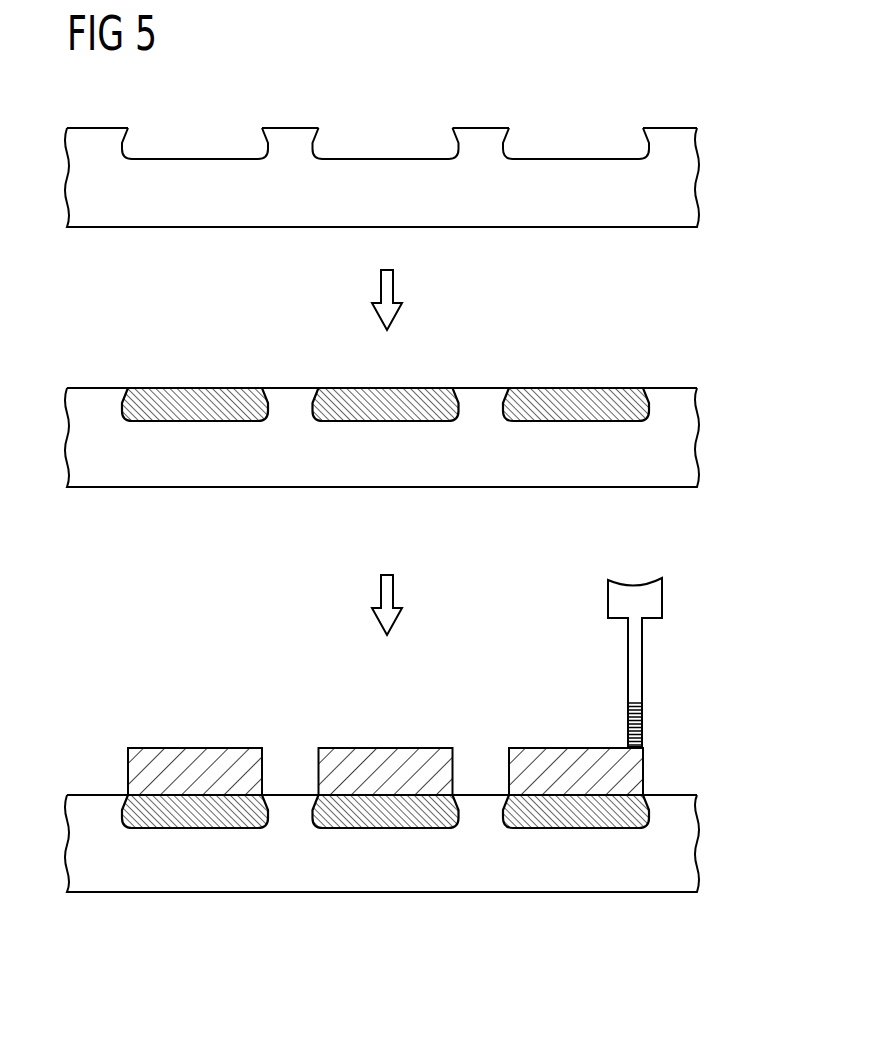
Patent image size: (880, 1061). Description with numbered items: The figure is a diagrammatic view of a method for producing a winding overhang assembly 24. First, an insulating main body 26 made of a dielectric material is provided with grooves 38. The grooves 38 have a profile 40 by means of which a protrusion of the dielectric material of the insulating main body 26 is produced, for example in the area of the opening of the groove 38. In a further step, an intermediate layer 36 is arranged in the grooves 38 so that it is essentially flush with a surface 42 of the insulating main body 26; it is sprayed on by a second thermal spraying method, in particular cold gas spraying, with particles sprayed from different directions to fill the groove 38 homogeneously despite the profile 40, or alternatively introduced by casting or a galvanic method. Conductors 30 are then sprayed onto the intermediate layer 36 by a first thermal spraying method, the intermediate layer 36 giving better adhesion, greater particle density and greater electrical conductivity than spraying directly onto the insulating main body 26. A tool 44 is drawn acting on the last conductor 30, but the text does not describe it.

The winding overhang assembly 24 is at (410, 489).
The insulating main body 26 is at (683, 170).
The conductors 30 is at (197, 766).
The intermediate layer 36 is at (233, 405).
The grooves 38 is at (197, 148).
The profile 40 is at (272, 147).
The surface 42 is at (97, 387).
The placement tool 44 is at (643, 726).